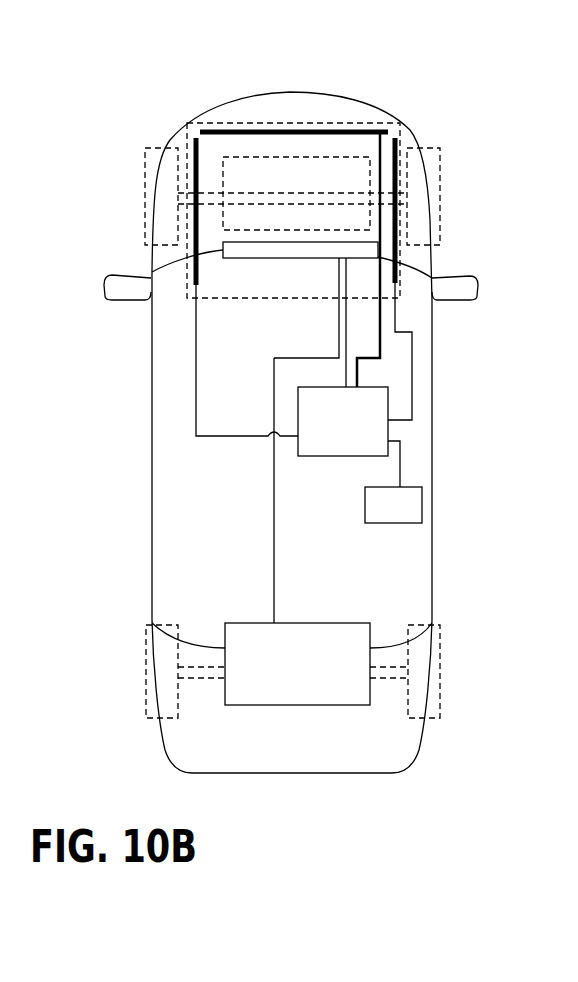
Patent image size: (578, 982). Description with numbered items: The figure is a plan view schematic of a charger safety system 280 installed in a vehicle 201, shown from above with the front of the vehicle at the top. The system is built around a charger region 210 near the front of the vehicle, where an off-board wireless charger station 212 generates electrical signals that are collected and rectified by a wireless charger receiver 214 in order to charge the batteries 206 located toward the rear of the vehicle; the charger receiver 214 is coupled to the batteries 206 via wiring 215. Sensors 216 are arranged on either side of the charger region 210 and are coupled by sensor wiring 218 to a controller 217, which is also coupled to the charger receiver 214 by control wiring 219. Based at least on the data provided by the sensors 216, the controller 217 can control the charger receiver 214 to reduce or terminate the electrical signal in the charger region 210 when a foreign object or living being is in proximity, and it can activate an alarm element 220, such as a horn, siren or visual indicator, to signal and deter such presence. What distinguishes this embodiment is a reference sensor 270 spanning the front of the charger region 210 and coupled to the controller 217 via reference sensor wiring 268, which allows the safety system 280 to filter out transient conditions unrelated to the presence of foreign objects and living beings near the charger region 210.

The vehicle 201 is at (432, 582).
The batteries 206 is at (287, 676).
The charger region 210 is at (367, 124).
The wireless charger station 212 is at (282, 157).
The wireless charger receiver 214 is at (378, 247).
The wiring 215 is at (274, 537).
The sensors 216 is at (190, 147).
The controller 217 is at (325, 441).
The sensor wiring 218 is at (196, 372).
The control wiring 219 is at (346, 365).
The alarm element 220 is at (381, 520).
The reference sensor wiring 268 is at (380, 313).
The reference sensor 270 is at (233, 130).
The charger safety system 280 is at (462, 128).